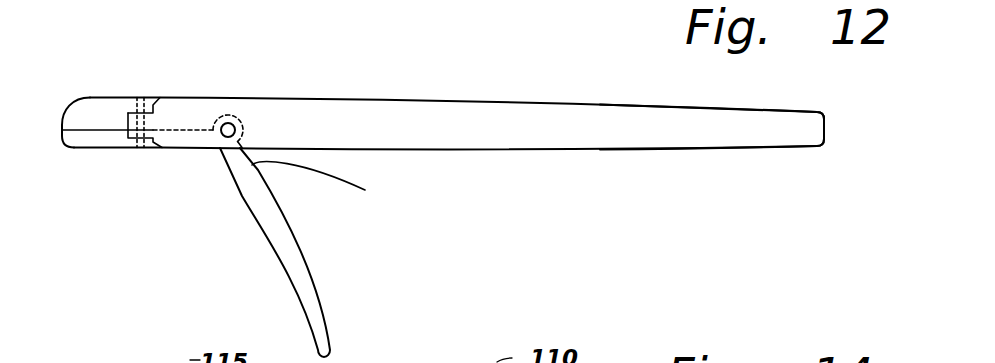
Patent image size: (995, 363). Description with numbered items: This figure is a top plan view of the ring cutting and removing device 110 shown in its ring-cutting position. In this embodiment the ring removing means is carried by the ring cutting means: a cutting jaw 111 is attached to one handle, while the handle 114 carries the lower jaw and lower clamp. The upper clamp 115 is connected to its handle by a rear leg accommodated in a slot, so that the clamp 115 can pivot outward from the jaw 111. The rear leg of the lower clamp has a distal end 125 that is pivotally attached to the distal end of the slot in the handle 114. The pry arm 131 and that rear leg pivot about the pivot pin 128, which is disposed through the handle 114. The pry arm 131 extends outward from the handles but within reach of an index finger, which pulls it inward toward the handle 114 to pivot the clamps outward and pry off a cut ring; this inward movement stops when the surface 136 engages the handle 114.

The ring cutting and removing device 110 is at (510, 80).
The cutting jaw 111 is at (107, 100).
The handle 114 is at (662, 138).
The upper clamp 115 is at (78, 148).
The distal end of the rear leg 125 is at (229, 116).
The pivot pin 128 is at (240, 126).
The pry arm 131 is at (322, 342).
The surface 136 is at (335, 187).